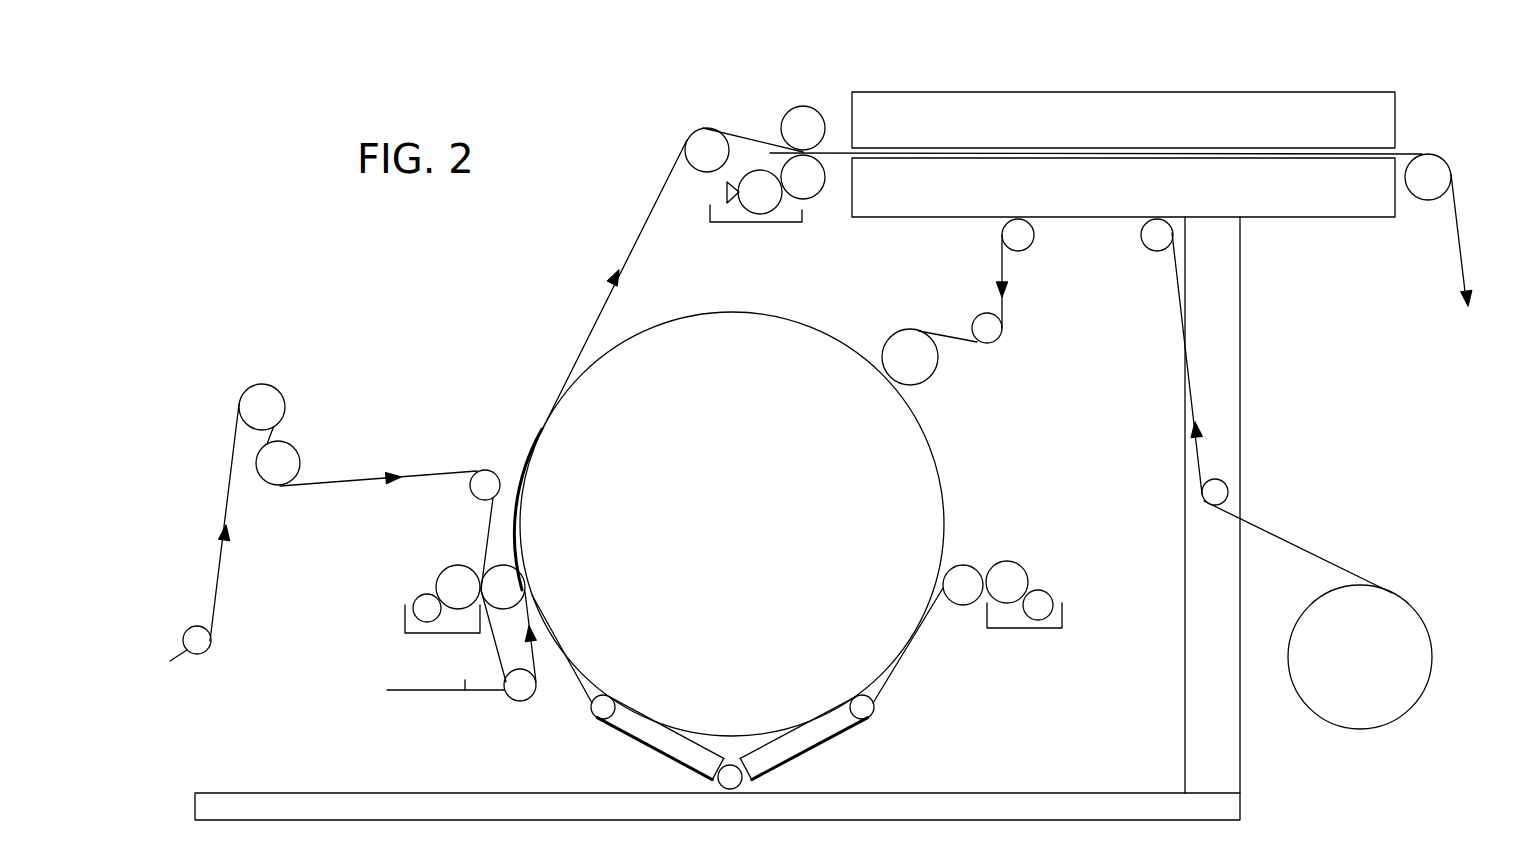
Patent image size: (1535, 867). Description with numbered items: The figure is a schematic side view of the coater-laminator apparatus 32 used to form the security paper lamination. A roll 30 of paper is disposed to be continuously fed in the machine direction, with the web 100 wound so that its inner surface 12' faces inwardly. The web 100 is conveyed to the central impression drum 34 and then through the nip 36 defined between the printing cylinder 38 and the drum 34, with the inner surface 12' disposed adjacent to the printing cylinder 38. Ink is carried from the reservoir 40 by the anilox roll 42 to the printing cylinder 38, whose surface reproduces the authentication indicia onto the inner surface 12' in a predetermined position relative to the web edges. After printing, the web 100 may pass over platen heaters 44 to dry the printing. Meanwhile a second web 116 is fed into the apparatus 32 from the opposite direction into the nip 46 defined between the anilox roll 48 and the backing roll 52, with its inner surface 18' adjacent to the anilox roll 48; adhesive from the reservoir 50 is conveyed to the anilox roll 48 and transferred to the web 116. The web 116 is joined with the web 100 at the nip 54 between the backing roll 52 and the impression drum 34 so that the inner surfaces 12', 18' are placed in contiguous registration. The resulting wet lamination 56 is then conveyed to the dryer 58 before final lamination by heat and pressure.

The coater-laminator apparatus 32 is at (1007, 62).
The dryer 58 is at (1117, 103).
The wet lamination 56 is at (600, 300).
The second web 116 is at (340, 478).
The inner surface 18' is at (235, 522).
The nip 46 is at (483, 575).
The anilox roll 48 is at (452, 585).
The reservoir 50 is at (405, 625).
The backing roll 52 is at (525, 577).
The nip 54 is at (535, 590).
The central impression drum 34 is at (766, 583).
The inner surface 12' is at (1133, 414).
The printing cylinder 38 is at (970, 565).
The anilox roll 42 is at (1025, 565).
The reservoir 40 is at (1002, 628).
The nip 36 is at (940, 597).
The platen heaters 44 is at (848, 757).
The web 100 is at (1283, 537).
The roll 30 is at (1381, 678).